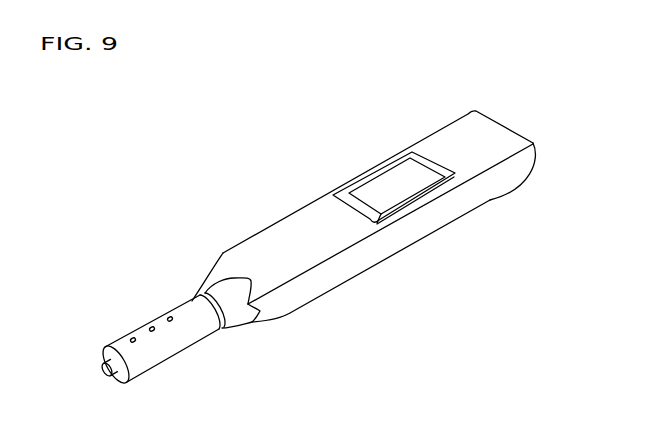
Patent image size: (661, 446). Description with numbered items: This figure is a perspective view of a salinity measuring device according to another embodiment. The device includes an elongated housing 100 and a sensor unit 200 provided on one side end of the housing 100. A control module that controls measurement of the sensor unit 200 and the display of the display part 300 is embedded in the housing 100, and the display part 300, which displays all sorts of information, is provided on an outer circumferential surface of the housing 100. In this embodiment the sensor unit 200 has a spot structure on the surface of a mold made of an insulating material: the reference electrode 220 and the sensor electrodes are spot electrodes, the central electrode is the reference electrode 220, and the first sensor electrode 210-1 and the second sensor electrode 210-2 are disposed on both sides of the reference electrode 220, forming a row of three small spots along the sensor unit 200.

The housing 100 is at (435, 218).
The sensor unit 200 is at (229, 356).
The first sensor electrode 210-1 is at (171, 316).
The second sensor electrode 210-2 is at (130, 338).
The reference electrode 220 is at (148, 325).
The display part 300 is at (383, 182).